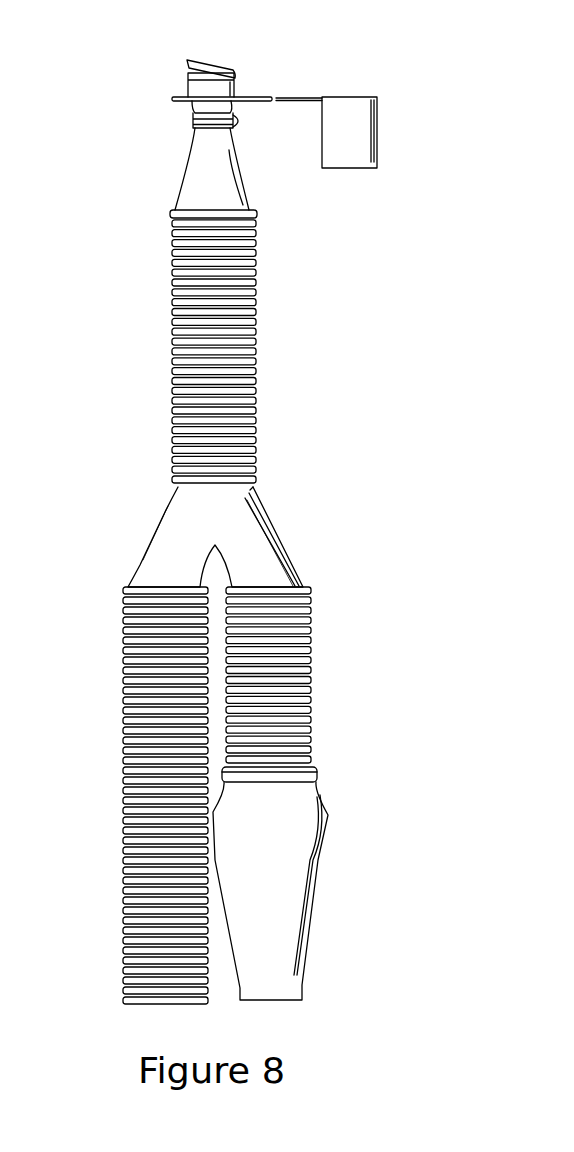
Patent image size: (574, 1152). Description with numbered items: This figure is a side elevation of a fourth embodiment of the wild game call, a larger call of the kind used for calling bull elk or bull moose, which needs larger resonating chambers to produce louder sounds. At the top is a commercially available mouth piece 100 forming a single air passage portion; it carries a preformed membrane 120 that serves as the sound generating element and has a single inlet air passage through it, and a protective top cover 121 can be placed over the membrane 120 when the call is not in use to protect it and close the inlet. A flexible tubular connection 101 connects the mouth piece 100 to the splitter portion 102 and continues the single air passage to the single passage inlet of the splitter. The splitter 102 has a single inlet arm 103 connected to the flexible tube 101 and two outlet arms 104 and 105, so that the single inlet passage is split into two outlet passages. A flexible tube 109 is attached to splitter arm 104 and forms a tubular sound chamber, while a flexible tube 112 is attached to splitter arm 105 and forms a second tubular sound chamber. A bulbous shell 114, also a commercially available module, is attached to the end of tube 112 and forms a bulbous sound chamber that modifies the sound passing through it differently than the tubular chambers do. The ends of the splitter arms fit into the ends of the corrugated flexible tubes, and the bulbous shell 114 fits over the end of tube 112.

The mouth piece 100 is at (168, 143).
The flexible tubular connection 101 is at (180, 345).
The splitter portion 102 is at (150, 498).
The single inlet arm 103 is at (237, 511).
The outlet arm 104 is at (180, 568).
The outlet arm 105 is at (262, 555).
The flexible tube 109 is at (128, 748).
The flexible tube 112 is at (302, 692).
The bulbous shell 114 is at (280, 872).
The preformed membrane 120 is at (223, 67).
The protective top cover 121 is at (355, 152).